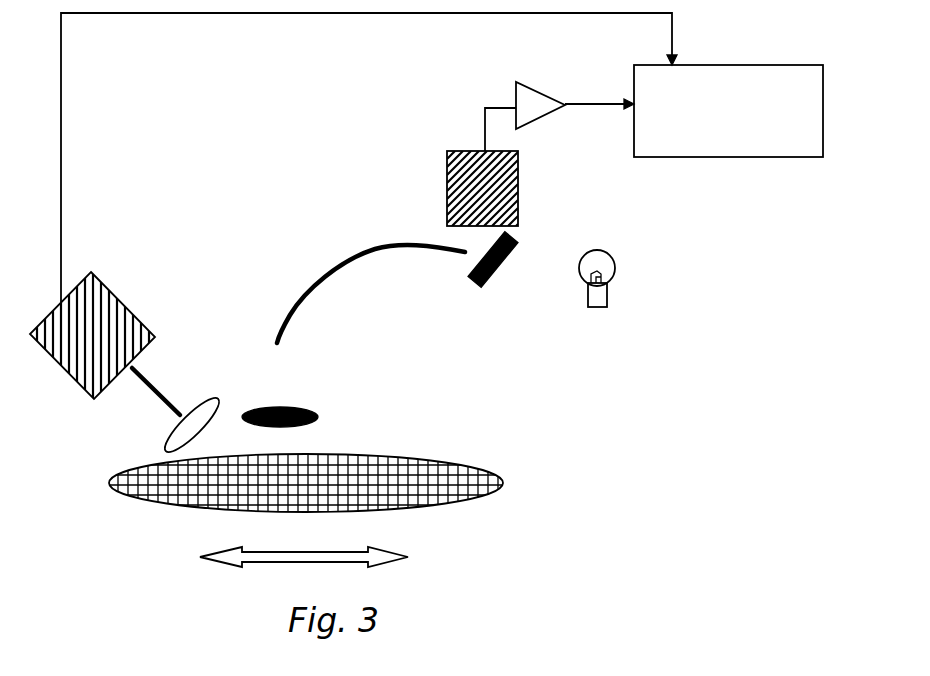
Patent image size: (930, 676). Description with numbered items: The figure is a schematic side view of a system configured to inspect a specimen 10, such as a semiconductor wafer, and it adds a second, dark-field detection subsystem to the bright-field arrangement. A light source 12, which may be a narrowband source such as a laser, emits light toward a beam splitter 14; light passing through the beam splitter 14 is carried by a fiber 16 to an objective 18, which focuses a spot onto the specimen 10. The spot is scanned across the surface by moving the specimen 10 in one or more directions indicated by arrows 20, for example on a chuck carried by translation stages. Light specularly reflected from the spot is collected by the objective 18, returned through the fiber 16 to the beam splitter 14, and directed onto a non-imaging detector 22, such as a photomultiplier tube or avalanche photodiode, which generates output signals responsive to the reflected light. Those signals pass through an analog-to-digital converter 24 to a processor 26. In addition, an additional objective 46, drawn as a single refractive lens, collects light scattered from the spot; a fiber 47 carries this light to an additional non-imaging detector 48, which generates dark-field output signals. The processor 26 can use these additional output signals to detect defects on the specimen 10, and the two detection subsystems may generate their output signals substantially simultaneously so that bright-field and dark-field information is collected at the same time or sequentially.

The specimen 10 is at (465, 466).
The light source 12 is at (612, 293).
The beam splitter 14 is at (511, 240).
The fiber 16 is at (345, 265).
The objective 18 is at (313, 410).
The arrows 20 is at (385, 558).
The non-imaging detector 22 is at (519, 181).
The analog-to-digital converter 24 is at (530, 86).
The processor 26 is at (716, 136).
The additional objective 46 is at (215, 405).
The fiber 47 is at (157, 392).
The additional non-imaging detector 48 is at (112, 296).